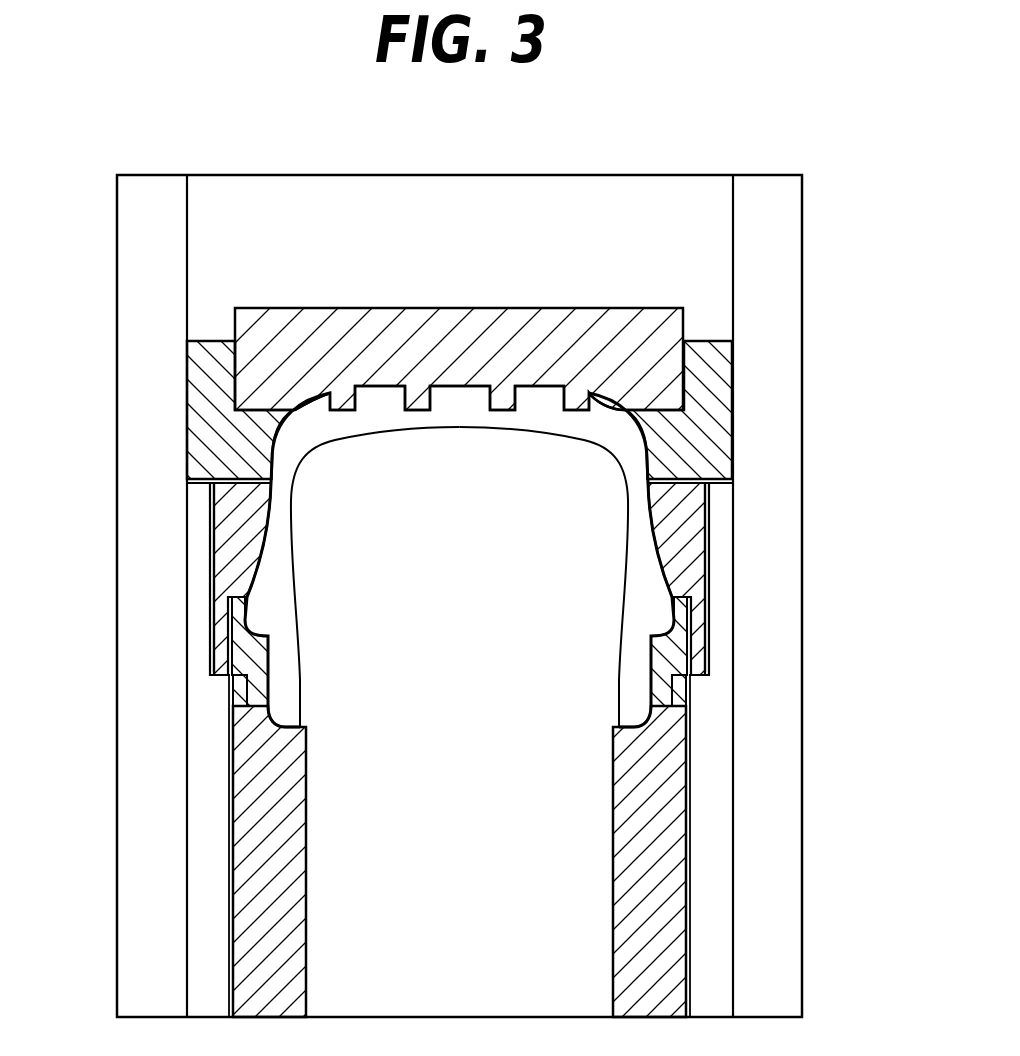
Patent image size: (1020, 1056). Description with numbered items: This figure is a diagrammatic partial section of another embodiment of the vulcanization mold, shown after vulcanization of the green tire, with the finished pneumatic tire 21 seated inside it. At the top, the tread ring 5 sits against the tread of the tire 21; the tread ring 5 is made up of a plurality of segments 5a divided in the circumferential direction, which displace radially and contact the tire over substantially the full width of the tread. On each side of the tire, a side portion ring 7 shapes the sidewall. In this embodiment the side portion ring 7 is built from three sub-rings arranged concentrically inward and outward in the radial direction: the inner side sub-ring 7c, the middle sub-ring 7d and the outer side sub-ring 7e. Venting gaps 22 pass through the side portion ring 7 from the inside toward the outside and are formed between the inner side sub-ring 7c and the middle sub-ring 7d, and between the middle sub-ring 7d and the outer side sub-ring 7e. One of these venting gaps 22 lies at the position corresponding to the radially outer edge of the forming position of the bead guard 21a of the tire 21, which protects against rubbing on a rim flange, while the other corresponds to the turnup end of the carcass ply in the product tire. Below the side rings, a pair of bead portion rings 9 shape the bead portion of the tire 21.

The tread ring 5 is at (459, 324).
The segments 5a is at (350, 325).
The pneumatic tire 21 is at (545, 394).
The bead guard 21a is at (220, 605).
The side portion ring 7 is at (198, 632).
The inner side sub-ring 7c is at (236, 690).
The middle sub-ring 7d is at (220, 523).
The outer side sub-ring 7e is at (210, 413).
The venting gaps 22 is at (710, 460).
The bead portion ring 9 is at (280, 840).